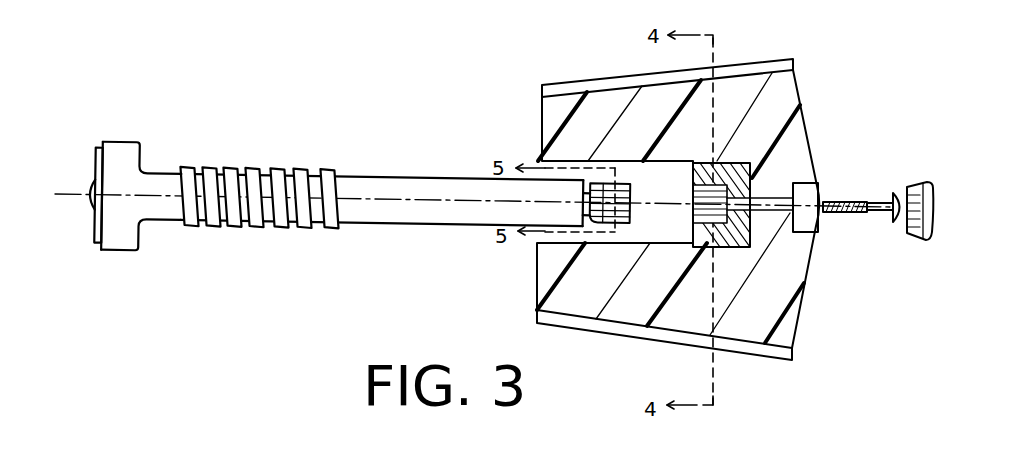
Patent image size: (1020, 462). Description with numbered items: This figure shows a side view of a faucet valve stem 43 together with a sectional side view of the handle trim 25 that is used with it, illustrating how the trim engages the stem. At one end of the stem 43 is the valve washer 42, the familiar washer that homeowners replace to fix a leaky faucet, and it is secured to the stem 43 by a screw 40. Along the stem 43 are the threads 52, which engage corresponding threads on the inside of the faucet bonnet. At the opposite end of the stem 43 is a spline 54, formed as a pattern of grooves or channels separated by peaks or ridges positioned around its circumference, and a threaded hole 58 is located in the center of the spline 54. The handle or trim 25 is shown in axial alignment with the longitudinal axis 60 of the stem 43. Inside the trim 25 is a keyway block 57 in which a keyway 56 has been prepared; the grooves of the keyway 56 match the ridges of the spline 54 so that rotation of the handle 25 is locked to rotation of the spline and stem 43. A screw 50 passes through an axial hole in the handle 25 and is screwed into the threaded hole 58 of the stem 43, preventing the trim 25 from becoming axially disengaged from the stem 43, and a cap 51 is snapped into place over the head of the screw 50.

The handle trim 25 is at (748, 353).
The screw 40 is at (87, 184).
The valve washer 42 is at (96, 239).
The valve stem 43 is at (407, 226).
The screw 50 is at (871, 201).
The cap 51 is at (915, 238).
The threads 52 is at (238, 228).
The spline 54 is at (626, 184).
The keyway 56 is at (692, 218).
The keyway block 57 is at (751, 172).
The threaded hole 58 is at (633, 205).
The longitudinal axis 60 is at (72, 196).